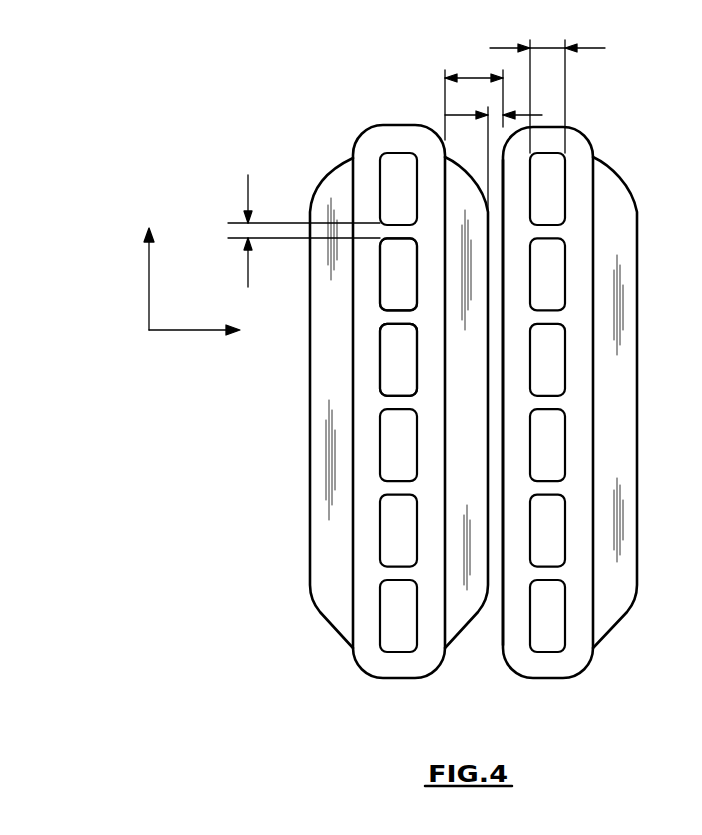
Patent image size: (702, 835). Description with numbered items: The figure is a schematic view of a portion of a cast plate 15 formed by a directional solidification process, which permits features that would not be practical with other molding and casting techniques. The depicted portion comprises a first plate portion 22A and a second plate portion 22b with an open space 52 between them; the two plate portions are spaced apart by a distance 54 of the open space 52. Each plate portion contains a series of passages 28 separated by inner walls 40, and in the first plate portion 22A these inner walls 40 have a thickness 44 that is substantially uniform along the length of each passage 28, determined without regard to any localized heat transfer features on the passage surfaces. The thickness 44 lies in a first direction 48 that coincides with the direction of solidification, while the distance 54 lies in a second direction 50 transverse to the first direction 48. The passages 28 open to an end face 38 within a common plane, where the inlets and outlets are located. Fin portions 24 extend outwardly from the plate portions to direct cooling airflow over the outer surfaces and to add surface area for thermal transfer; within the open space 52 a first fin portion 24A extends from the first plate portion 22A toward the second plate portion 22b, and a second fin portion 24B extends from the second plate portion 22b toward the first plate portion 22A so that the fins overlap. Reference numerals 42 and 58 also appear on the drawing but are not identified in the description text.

The cast plate 15 is at (200, 96).
The first plate portion 22A is at (348, 401).
The second plate portion 22b is at (520, 608).
The fin portions 24 is at (327, 600).
The first fin portion 24A is at (468, 492).
The second fin portion 24B is at (492, 543).
The passages 28 is at (395, 378).
The inner walls 40 is at (402, 233).
The plate body 42 is at (367, 188).
The thickness 44 is at (465, 115).
The first direction 48 is at (149, 287).
The second direction 50 is at (178, 330).
The open space 52 is at (483, 341).
The distance 54 is at (473, 77).
The slot width 58 is at (547, 47).
The end face 38 is at (692, 17).